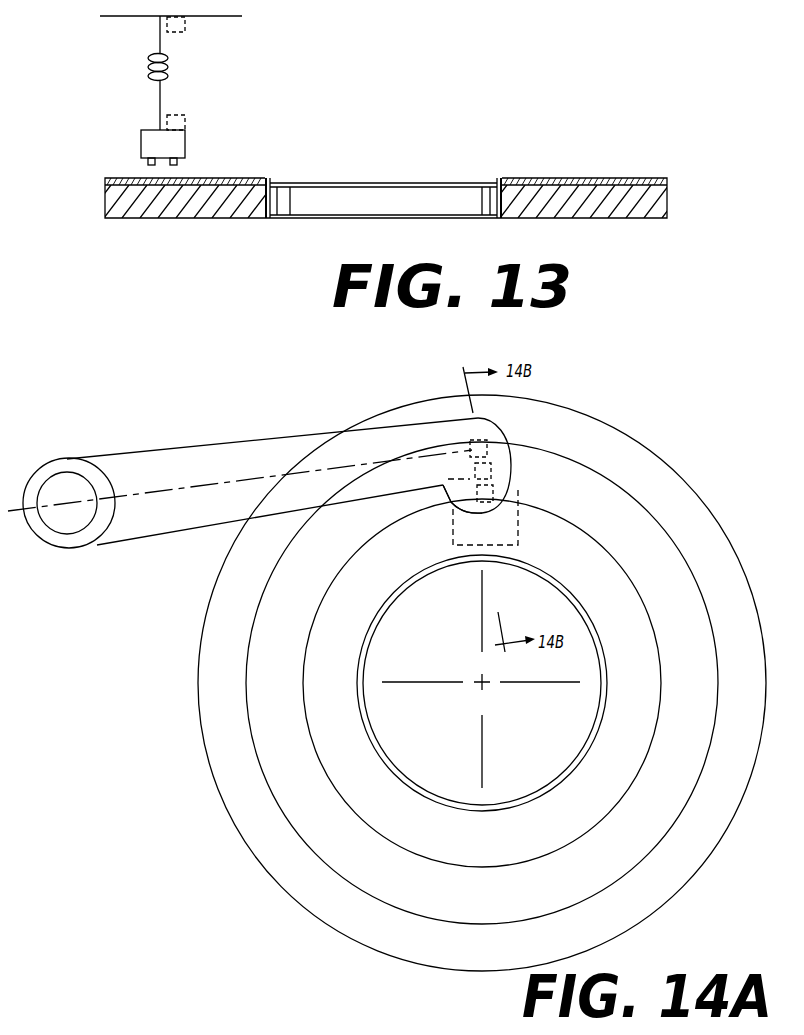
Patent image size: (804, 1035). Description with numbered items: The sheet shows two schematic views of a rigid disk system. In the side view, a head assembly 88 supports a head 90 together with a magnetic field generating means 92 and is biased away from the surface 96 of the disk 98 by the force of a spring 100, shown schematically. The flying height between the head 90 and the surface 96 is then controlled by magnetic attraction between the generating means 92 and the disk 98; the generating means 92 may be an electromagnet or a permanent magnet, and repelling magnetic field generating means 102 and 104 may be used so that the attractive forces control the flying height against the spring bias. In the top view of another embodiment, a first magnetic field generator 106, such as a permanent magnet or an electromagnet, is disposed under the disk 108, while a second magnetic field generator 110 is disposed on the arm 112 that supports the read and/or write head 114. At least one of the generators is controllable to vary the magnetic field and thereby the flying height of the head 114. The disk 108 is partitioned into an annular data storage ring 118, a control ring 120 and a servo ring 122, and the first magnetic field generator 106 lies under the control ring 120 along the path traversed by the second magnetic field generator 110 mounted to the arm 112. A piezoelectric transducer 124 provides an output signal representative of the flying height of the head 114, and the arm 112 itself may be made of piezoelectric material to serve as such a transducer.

In FIG. 13, the head assembly 88 is at (204, 138).
In FIG. 13, the head 90 is at (142, 164).
In FIG. 13, the magnetic field generating means 92 is at (186, 165).
In FIG. 13, the surface 96 is at (259, 174).
In FIG. 13, the disk 98 is at (102, 210).
In FIG. 13, the spring 100 is at (180, 67).
In FIG. 13, the repelling magnetic field generating means 102 is at (190, 118).
In FIG. 13, the repelling magnetic field generating means 104 is at (185, 26).
In FIG. 14A, the first magnetic field generator 106 is at (503, 517).
In FIG. 14A, the disk 108 is at (222, 820).
In FIG. 14A, the second magnetic field generator 110 is at (478, 498).
In FIG. 14A, the arm 112 is at (385, 442).
In FIG. 14A, the read and/or write head 114 is at (486, 447).
In FIG. 14A, the annular data storage ring 118 is at (506, 956).
In FIG. 14A, the control ring 120 is at (504, 907).
In FIG. 14A, the servo ring 122 is at (499, 843).
In FIG. 14A, the piezoelectric transducer 124 is at (470, 468).